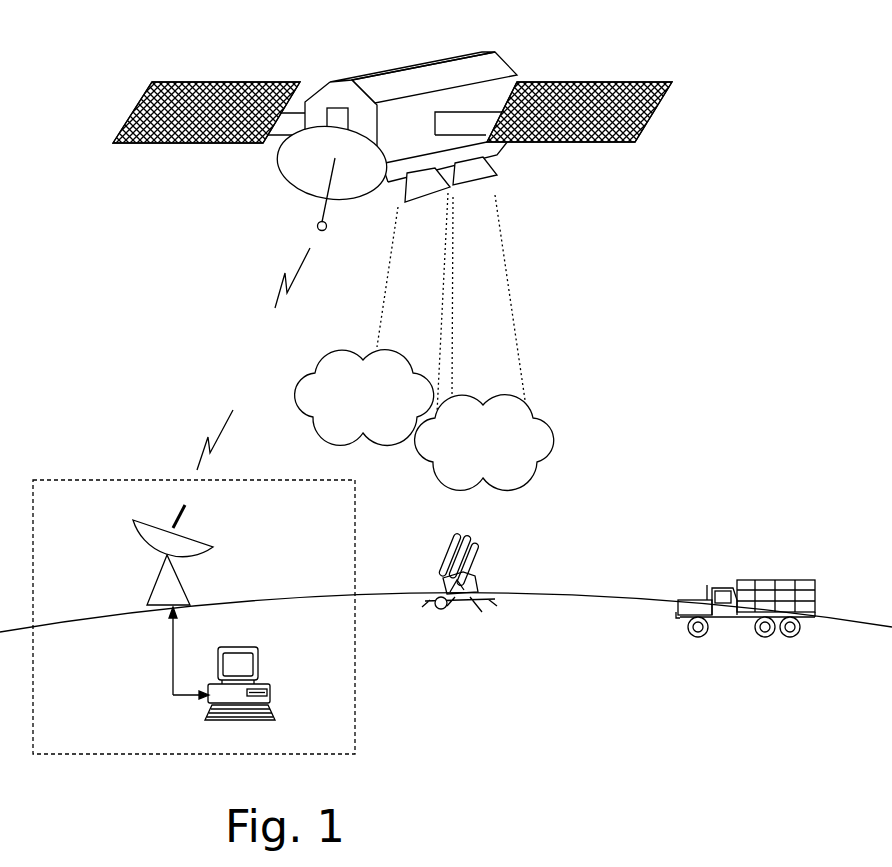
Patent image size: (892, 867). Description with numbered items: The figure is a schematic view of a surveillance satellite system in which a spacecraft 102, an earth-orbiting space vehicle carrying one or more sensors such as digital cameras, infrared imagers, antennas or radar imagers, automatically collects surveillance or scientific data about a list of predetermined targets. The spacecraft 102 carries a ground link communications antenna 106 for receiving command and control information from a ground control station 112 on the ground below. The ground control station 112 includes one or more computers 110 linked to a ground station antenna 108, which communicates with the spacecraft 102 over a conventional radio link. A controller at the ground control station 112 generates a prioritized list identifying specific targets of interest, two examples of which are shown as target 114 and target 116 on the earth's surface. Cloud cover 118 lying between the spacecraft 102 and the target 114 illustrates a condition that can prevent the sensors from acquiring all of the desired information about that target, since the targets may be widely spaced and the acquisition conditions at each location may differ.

The spacecraft 102 is at (398, 65).
The ground link communications antenna 106 is at (278, 160).
The ground station antenna 108 is at (145, 546).
The computer 110 is at (268, 684).
The ground control station 112 is at (231, 617).
The target 114 is at (455, 552).
The target 116 is at (765, 580).
The cloud 118 is at (334, 349).